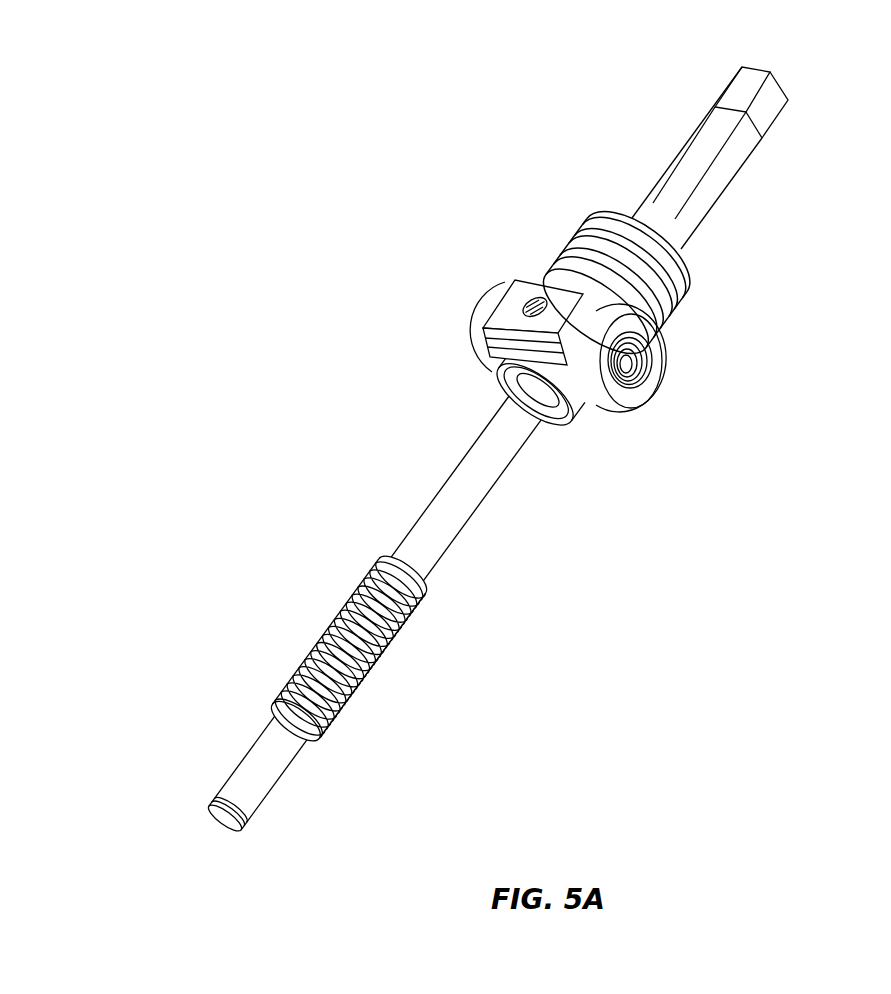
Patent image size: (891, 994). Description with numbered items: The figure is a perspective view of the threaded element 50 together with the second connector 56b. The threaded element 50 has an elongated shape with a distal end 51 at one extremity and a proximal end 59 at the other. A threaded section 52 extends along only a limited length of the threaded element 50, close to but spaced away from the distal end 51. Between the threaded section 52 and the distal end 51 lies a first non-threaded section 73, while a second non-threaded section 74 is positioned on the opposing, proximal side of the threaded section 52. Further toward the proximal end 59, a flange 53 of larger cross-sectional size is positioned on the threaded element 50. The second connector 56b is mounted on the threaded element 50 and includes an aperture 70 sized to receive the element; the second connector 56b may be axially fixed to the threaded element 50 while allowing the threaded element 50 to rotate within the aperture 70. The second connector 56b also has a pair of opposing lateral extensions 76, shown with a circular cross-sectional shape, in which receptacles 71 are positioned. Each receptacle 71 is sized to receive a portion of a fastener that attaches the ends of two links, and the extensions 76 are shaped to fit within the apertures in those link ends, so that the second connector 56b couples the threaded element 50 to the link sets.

The threaded element 50 is at (398, 516).
The distal end 51 is at (220, 823).
The threaded section 52 is at (317, 637).
The flange 53 is at (580, 224).
The second connector 56b is at (512, 307).
The proximal end 59 is at (787, 83).
The aperture 70 is at (506, 395).
The receptacle 71 is at (643, 362).
The first non-threaded section 73 is at (248, 765).
The second non-threaded section 74 is at (467, 497).
The extension 76 is at (480, 332).